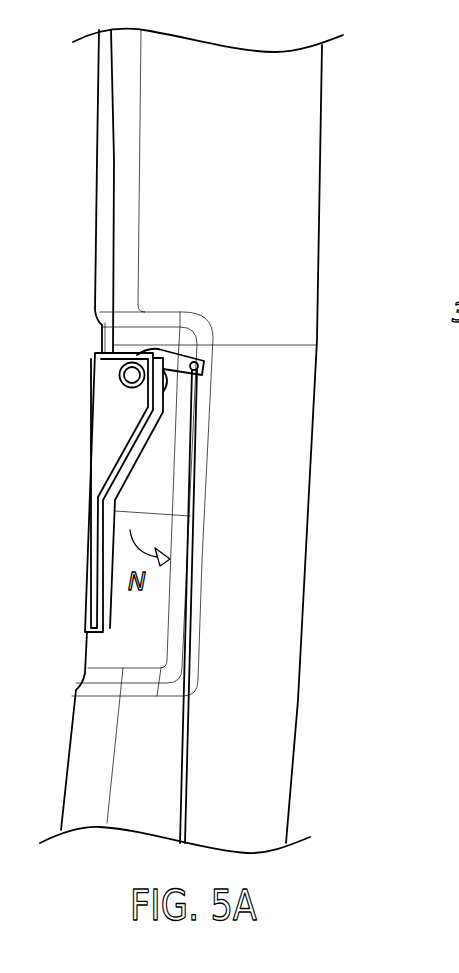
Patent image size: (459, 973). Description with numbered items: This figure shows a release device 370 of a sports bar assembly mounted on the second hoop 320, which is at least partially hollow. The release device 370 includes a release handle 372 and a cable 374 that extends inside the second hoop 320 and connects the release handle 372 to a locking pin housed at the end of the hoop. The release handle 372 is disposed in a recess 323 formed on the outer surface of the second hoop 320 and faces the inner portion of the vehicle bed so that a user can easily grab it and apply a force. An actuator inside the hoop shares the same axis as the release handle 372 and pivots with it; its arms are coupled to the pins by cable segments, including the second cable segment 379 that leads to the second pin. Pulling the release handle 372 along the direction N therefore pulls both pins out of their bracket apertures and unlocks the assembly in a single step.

The second hoop 320 is at (252, 187).
The recess 323 is at (155, 658).
The release device 370 is at (112, 572).
The release handle 372 is at (117, 436).
The cable 374 is at (106, 223).
The second cable segment 379 is at (112, 193).